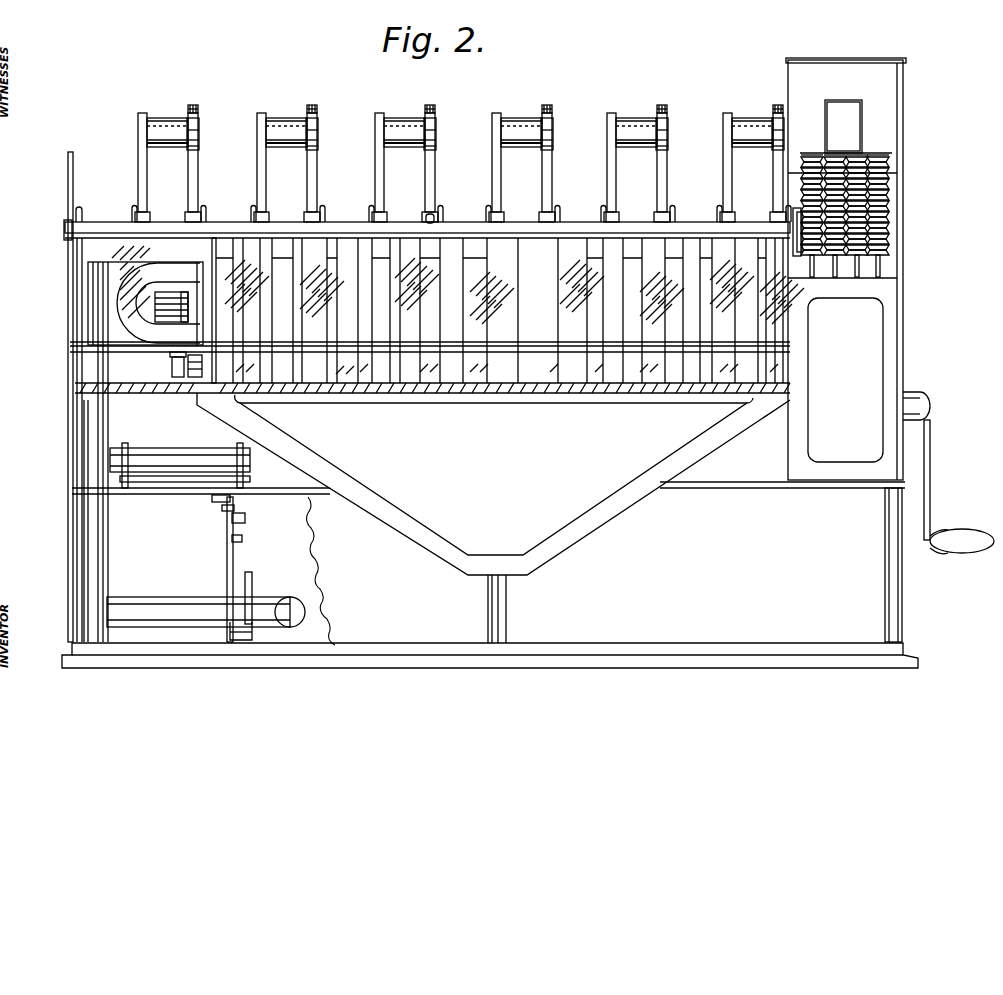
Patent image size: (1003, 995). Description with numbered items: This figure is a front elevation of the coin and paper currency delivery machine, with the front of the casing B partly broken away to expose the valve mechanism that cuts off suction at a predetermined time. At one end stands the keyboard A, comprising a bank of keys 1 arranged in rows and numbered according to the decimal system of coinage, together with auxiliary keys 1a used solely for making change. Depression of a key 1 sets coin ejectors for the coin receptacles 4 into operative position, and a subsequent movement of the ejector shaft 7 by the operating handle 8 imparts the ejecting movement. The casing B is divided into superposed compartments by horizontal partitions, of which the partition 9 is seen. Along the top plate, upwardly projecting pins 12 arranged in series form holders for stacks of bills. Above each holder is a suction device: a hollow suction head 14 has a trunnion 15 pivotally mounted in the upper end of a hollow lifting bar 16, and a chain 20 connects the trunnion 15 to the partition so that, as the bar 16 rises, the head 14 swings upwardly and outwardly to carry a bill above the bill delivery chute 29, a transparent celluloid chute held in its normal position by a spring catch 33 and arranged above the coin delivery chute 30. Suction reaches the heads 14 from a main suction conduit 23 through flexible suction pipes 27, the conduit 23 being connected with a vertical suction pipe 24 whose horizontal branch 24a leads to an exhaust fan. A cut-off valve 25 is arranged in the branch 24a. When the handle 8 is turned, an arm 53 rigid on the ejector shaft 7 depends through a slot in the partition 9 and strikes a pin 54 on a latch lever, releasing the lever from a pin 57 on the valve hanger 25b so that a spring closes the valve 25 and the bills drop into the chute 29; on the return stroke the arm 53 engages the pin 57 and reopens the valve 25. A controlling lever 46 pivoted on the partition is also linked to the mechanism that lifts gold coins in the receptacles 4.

The keys 1 is at (807, 135).
The auxiliary keys 1a is at (883, 158).
The coin receptacles 4 is at (287, 393).
The ejector shaft 7 is at (155, 448).
The operating handle 8 is at (931, 486).
The horizontal partition 9 is at (178, 494).
The pins 12 is at (133, 212).
The suction head 14 is at (375, 153).
The trunnion 15 is at (396, 122).
The lifting bar 16 is at (436, 155).
The chain 20 is at (432, 104).
The main suction conduit 23 is at (152, 266).
The vertical suction pipe 24 is at (106, 424).
The horizontal branch pipe 24a is at (160, 602).
The cut-off valve 25 is at (254, 583).
The valve hanger 25b is at (230, 558).
The flexible suction pipes 27 is at (120, 297).
The bill delivery chute 29 is at (457, 222).
The coin delivery chute 30 is at (597, 523).
The spring catch 33 is at (428, 218).
The controlling lever 46 is at (790, 213).
The arm 53 is at (240, 507).
The pin 54 is at (245, 524).
The pin 57 is at (242, 543).
The keyboard A is at (888, 232).
The casing B is at (847, 575).